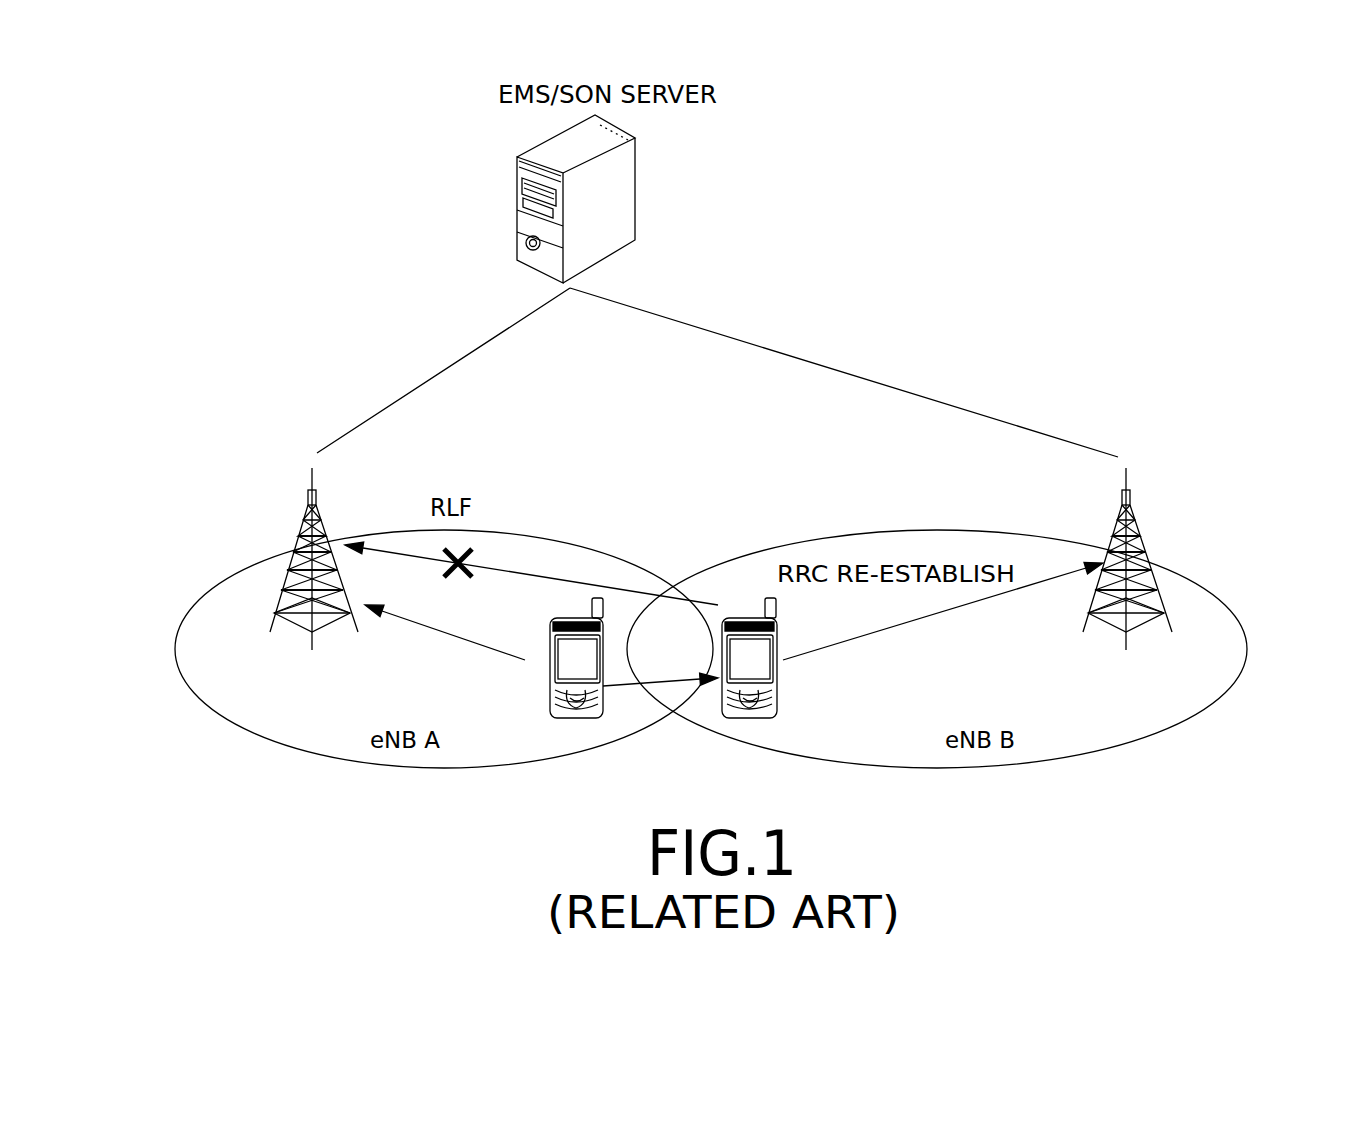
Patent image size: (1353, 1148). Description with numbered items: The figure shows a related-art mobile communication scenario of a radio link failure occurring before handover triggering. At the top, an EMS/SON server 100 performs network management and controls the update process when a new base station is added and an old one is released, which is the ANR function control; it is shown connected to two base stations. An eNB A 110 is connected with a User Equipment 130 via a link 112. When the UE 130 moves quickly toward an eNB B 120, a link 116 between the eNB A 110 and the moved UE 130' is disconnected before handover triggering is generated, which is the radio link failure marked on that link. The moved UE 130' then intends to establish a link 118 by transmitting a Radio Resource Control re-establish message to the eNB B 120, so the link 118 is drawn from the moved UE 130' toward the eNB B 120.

The EMS/SON server 100 is at (636, 184).
The eNB A 110 is at (297, 632).
The eNB B 120 is at (1138, 632).
The User Equipment (UE) 130 is at (555, 676).
The moved UE 130' is at (789, 658).
The link 112 is at (453, 636).
The link 116 is at (533, 573).
The link 118 is at (950, 617).